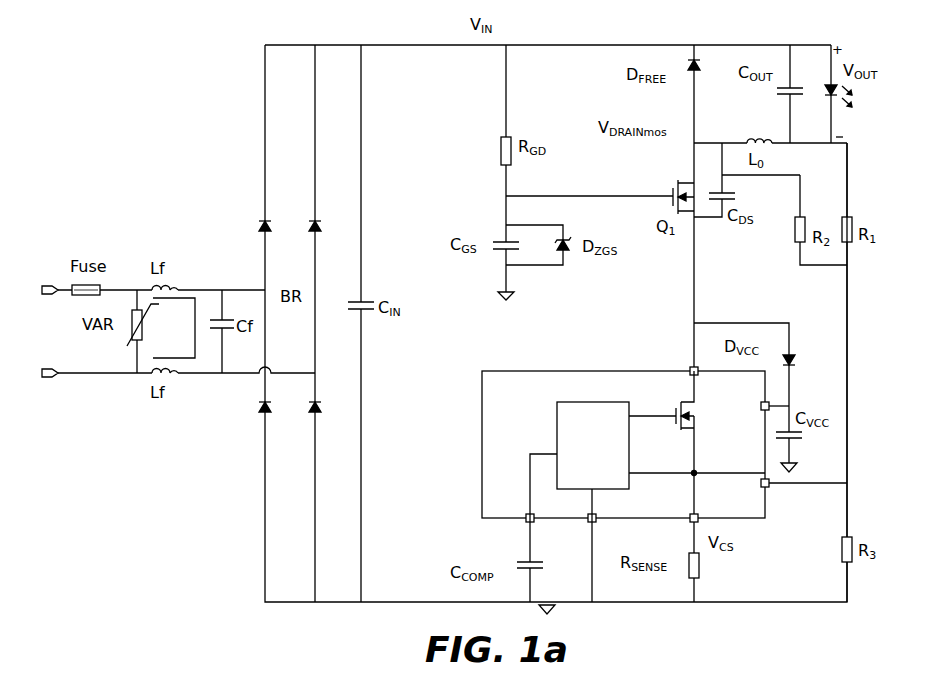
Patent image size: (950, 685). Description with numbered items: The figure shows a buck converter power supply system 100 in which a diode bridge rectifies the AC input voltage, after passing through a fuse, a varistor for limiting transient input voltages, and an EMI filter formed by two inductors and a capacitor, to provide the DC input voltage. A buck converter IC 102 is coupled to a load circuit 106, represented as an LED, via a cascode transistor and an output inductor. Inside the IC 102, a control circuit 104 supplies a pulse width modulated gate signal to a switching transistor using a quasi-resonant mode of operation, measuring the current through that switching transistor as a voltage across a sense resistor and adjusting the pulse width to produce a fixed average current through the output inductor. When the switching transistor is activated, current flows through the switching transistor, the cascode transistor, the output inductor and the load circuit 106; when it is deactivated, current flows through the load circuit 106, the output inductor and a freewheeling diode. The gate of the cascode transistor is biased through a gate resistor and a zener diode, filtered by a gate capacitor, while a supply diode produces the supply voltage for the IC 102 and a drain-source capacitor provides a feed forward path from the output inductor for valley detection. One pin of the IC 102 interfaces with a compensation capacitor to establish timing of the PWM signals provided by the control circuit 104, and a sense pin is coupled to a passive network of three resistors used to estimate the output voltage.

The buck converter power supply system 100 is at (176, 66).
The buck converter IC 102 is at (547, 371).
The control circuit 104 is at (574, 402).
The load circuit 106 is at (831, 97).